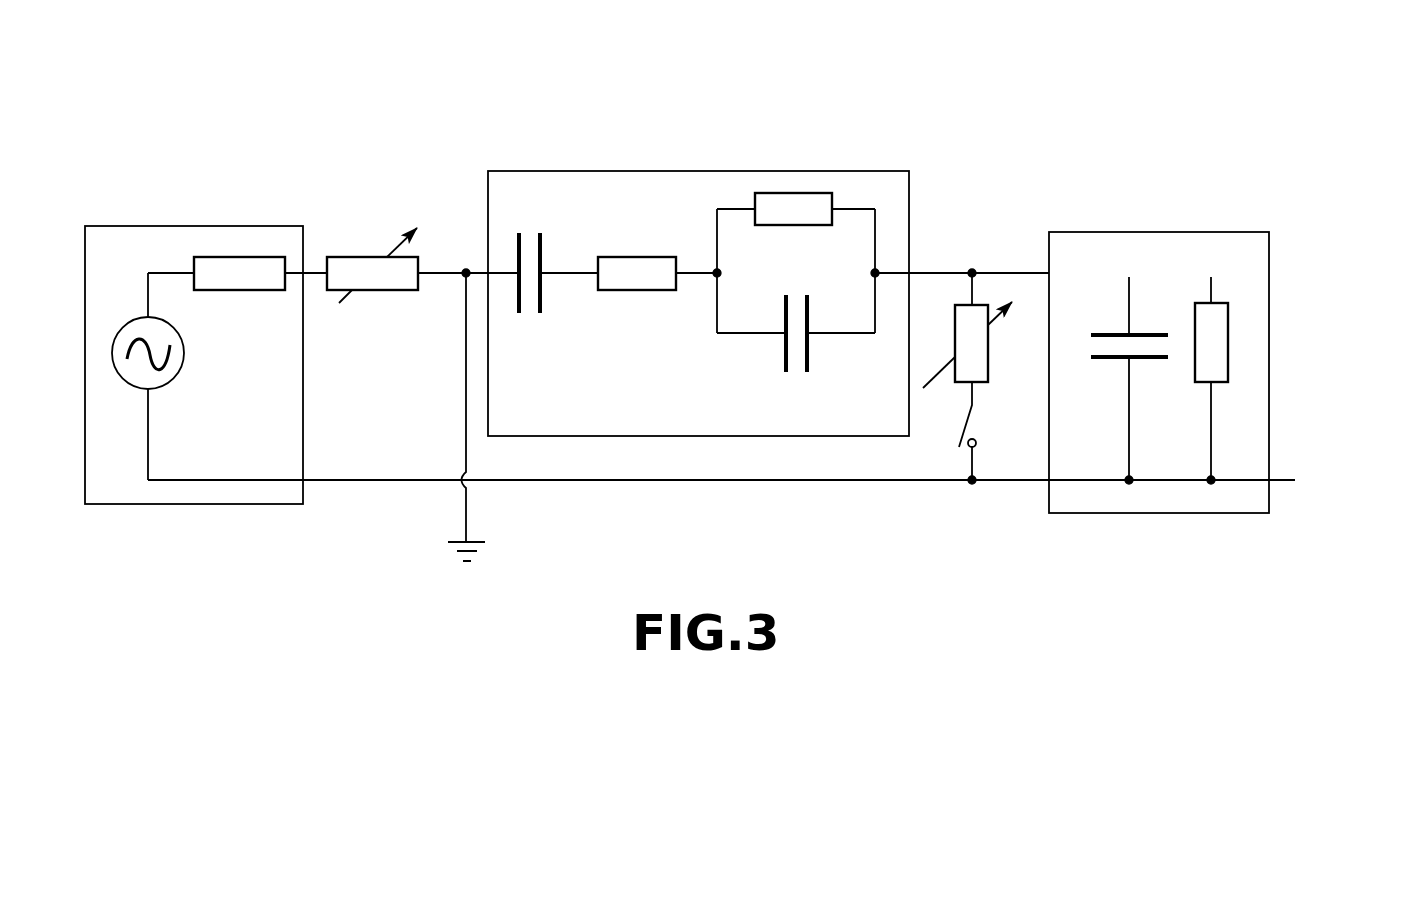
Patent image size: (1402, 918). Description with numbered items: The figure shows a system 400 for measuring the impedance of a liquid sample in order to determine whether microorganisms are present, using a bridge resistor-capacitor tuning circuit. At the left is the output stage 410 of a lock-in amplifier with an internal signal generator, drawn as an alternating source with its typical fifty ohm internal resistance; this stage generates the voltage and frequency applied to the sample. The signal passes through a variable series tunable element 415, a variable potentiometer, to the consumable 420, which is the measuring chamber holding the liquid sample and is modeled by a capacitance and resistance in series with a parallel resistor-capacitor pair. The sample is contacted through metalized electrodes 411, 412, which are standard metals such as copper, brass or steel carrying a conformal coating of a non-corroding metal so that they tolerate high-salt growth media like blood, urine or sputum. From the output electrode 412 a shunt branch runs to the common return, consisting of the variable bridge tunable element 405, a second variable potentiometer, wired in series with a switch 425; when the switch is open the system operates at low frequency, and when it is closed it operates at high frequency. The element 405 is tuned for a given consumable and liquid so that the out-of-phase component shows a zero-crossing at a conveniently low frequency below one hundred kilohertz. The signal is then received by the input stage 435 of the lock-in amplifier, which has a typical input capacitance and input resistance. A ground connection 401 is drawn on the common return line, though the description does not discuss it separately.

The system for measuring impedance 400 is at (1300, 102).
The ground 401 is at (558, 562).
The variable bridge tunable element 405 is at (977, 384).
The output stage of the lock-in amplifier 410 is at (222, 504).
The metalized electrode 411 is at (498, 270).
The metalized electrode 412 is at (878, 268).
The variable series tunable element 415 is at (370, 292).
The consumable 420 is at (707, 436).
The switch 425 is at (965, 427).
The input stage of the lock-in amplifier 435 is at (1158, 232).